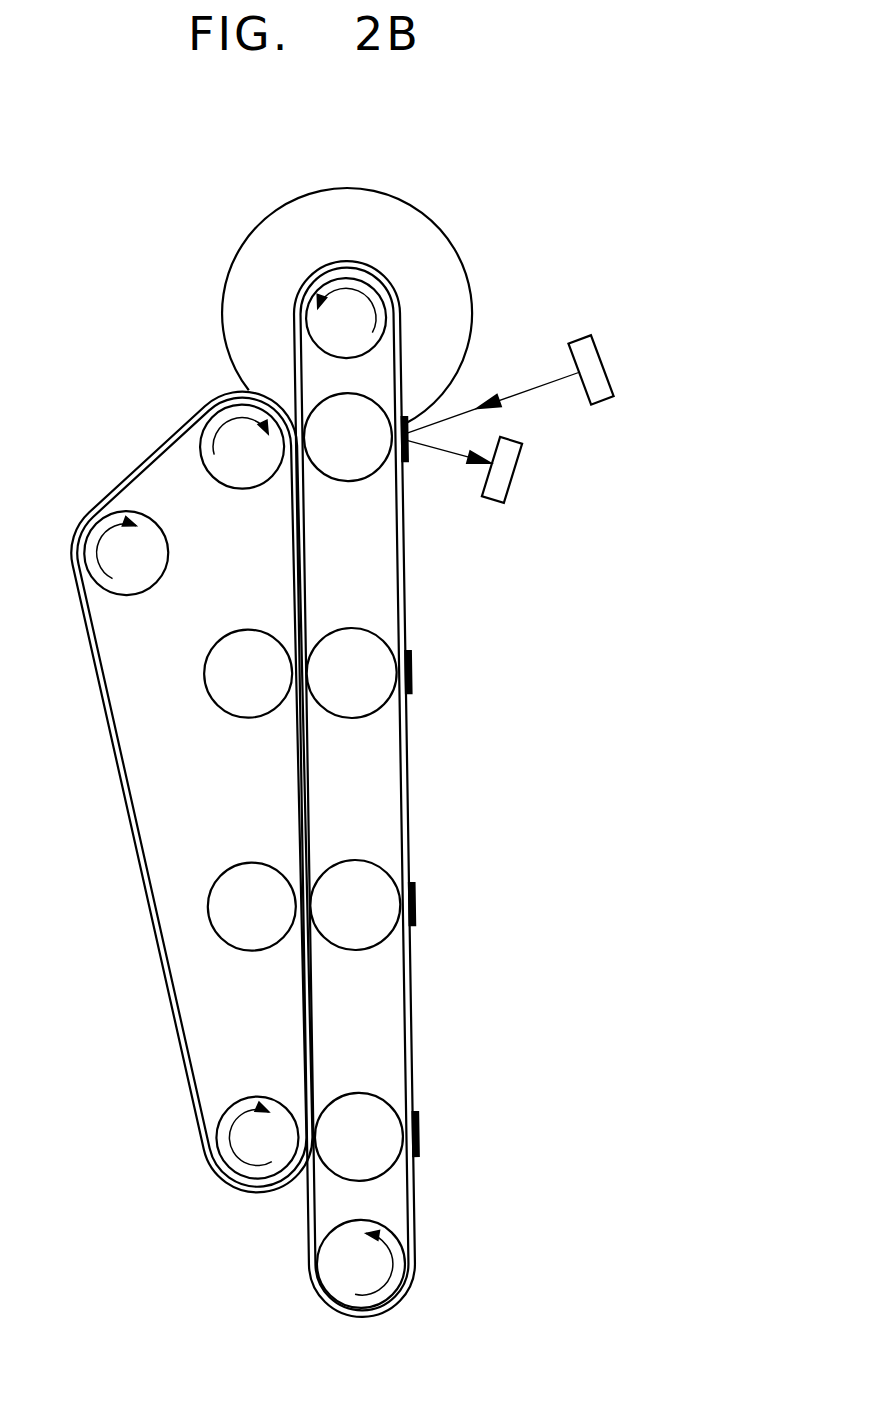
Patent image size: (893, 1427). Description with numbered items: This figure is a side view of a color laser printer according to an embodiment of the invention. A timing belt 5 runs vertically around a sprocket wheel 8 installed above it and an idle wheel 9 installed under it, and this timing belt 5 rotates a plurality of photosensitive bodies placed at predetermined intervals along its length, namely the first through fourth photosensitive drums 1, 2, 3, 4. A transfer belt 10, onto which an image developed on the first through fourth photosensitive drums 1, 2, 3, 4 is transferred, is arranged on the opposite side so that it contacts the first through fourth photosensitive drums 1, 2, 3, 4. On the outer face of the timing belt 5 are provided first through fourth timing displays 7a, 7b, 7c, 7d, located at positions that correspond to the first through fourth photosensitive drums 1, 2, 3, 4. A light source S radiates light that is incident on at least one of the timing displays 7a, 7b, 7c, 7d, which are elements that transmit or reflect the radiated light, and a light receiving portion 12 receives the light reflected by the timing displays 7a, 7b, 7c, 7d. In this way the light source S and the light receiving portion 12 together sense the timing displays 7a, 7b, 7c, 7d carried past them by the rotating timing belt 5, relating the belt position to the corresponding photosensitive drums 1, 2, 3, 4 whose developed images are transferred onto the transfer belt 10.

The first photosensitive drum 1 is at (353, 483).
The second photosensitive drum 2 is at (375, 645).
The third photosensitive drum 3 is at (374, 878).
The fourth photosensitive drum 4 is at (375, 1108).
The timing belt 5 is at (403, 998).
The first timing display 7a is at (412, 464).
The second timing display 7b is at (412, 674).
The third timing display 7c is at (410, 908).
The fourth timing display 7d is at (410, 1138).
The sprocket wheel 8 is at (322, 319).
The idle wheel 9 is at (324, 1272).
The transfer belt 10 is at (157, 452).
The light receiving portion 12 is at (513, 475).
The light source S is at (610, 376).